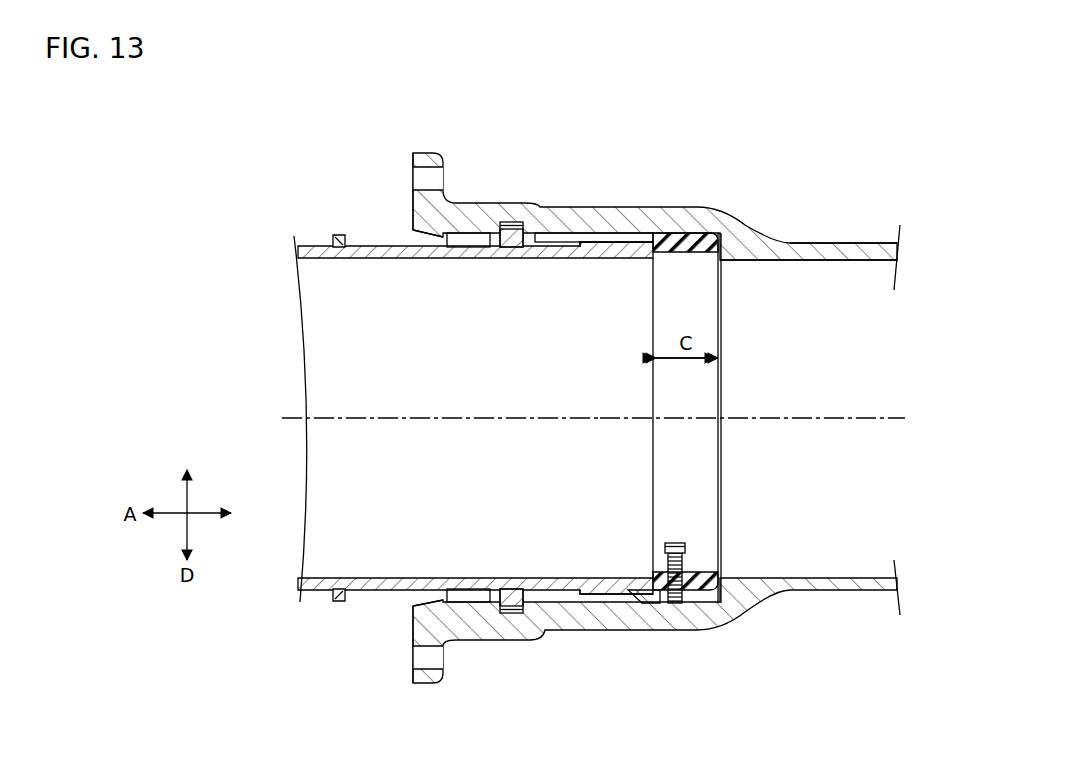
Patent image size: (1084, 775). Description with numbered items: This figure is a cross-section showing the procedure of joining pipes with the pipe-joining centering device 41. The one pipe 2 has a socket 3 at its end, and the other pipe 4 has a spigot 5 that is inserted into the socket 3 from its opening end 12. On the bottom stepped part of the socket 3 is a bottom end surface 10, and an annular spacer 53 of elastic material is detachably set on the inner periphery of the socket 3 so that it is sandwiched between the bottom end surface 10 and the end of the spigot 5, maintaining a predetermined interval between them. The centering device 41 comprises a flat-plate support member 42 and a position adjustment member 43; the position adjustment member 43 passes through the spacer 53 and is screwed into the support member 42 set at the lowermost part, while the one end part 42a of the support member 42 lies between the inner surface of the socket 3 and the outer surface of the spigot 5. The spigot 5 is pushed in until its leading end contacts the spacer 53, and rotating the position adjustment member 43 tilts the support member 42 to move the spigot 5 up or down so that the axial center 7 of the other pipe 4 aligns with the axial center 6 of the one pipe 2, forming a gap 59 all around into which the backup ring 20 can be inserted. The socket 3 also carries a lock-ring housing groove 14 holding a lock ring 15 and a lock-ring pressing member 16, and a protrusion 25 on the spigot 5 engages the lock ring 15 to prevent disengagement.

The one pipe 2 is at (848, 240).
The socket 3 is at (463, 208).
The other pipe 4 is at (316, 243).
The spigot 5 is at (632, 243).
The axial center of the one pipe 6 is at (905, 418).
The axial center of the other pipe 7 is at (325, 418).
The bottom end surface 10 is at (722, 262).
The opening end 12 is at (410, 600).
The lock-ring housing groove 14 is at (514, 613).
The lock ring 15 is at (530, 236).
The lock-ring pressing member 16 is at (507, 222).
The backup ring 20 is at (338, 236).
The protrusion 25 is at (590, 241).
The pipe-joining centering device 41 is at (679, 540).
The support member 42 is at (645, 608).
The one end part 42a is at (620, 604).
The position adjustment member 43 is at (665, 547).
The spacer 53 is at (683, 250).
The gap 59 is at (416, 238).